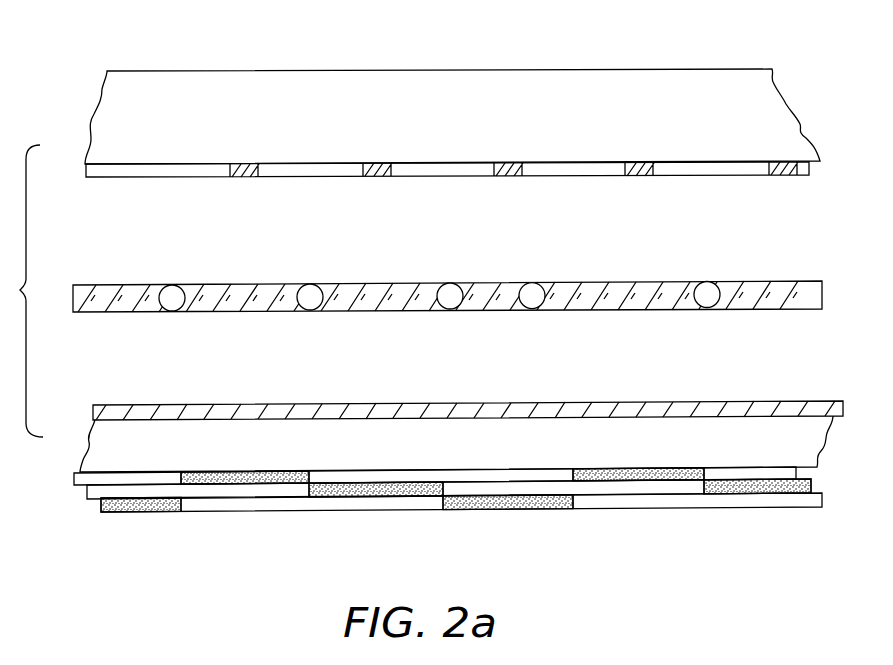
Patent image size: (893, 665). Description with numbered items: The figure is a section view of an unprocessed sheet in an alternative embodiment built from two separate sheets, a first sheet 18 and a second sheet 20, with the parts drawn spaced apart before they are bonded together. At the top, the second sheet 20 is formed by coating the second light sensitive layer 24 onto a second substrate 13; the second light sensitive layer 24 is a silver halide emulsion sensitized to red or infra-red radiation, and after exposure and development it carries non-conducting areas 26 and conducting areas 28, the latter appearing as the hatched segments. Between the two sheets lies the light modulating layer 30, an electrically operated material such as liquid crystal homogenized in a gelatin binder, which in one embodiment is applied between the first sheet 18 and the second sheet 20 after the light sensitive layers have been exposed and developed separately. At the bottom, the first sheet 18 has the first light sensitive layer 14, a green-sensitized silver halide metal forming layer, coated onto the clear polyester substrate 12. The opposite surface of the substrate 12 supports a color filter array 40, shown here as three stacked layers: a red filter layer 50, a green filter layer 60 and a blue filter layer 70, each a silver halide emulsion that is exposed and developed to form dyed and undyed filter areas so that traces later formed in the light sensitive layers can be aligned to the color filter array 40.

The substrate 12 is at (226, 432).
The second substrate 13 is at (209, 92).
The first light sensitive layer 14 is at (119, 412).
The first sheet 18 is at (155, 523).
The second sheet 20 is at (187, 70).
The second light sensitive layer 24 is at (83, 172).
The non-conducting areas 26 is at (167, 176).
The conducting areas 28 is at (245, 177).
The light modulating layer 30 is at (355, 286).
The color filter array 40 is at (62, 473).
The red filter layer 50 is at (330, 478).
The green filter layer 60 is at (450, 489).
The blue filter layer 70 is at (647, 503).